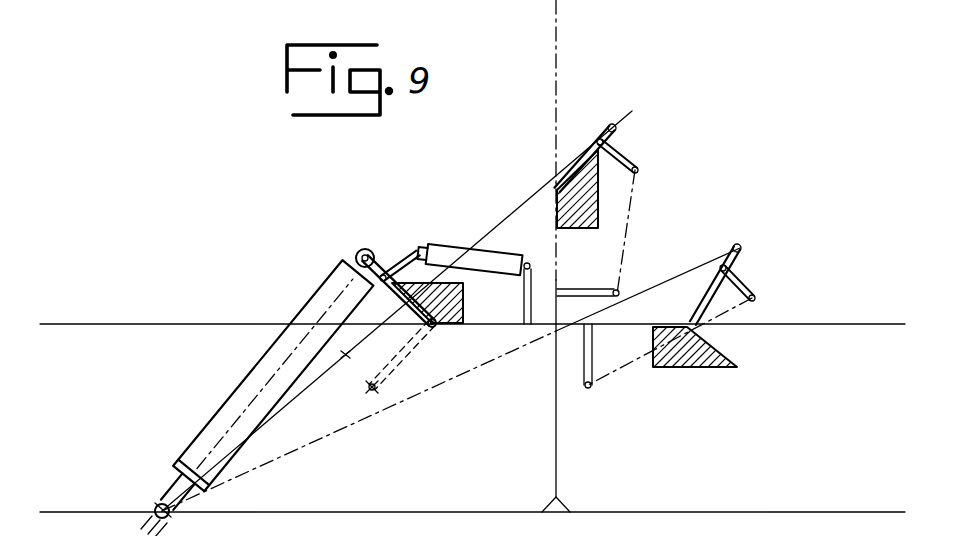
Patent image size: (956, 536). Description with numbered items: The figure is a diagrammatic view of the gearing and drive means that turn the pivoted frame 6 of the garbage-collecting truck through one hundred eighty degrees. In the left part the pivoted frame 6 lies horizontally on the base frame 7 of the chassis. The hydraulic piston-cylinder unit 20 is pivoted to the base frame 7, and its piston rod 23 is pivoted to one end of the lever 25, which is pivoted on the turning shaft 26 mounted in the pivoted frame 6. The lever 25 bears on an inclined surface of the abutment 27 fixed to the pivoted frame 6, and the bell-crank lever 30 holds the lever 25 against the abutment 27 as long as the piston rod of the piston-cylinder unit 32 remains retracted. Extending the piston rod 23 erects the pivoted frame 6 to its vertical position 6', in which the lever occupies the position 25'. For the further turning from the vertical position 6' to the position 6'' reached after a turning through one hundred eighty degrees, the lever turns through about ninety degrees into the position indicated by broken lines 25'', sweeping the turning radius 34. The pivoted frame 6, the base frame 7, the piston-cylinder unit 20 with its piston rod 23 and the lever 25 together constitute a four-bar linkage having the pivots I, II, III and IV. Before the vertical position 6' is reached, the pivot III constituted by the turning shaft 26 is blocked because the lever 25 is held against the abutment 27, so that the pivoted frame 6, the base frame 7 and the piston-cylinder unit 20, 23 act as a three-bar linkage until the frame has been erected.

The pivoted frame 6 is at (298, 298).
The vertical position of the pivoted frame 6' is at (574, 140).
The turned position of the pivoted frame 6'' is at (730, 308).
The base frame 7 is at (455, 512).
The hydraulic piston-cylinder unit 20 is at (230, 420).
The piston rod 23 is at (356, 260).
The lever 25 is at (398, 249).
The lever position 25' is at (605, 184).
The lever position after turning 25'' is at (697, 315).
The turning shaft 26 is at (437, 329).
The abutment 27 is at (597, 207).
The bell-crank lever 30 is at (405, 250).
The piston-cylinder unit 32 is at (478, 248).
The turning radius 34 is at (390, 368).
The pivot I is at (157, 503).
The pivot II is at (362, 250).
The pivot III is at (433, 330).
The pivot IV is at (557, 332).